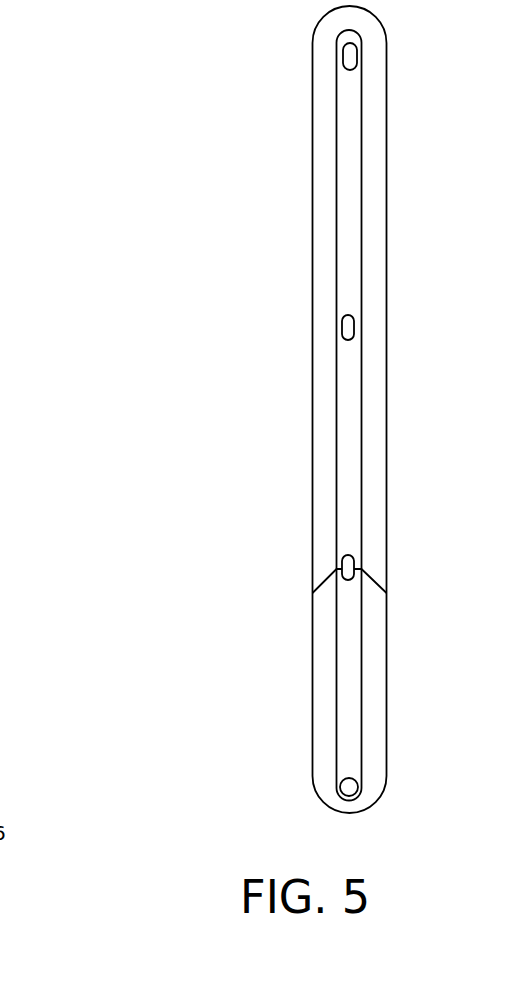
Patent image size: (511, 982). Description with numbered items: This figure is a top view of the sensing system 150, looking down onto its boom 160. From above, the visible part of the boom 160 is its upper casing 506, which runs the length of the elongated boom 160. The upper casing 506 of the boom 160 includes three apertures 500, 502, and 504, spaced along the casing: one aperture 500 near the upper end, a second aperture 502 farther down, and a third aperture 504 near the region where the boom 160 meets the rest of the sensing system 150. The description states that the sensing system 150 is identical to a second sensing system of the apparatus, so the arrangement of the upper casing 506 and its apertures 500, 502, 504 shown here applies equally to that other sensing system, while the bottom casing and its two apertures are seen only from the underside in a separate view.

The sensing system 150 is at (298, 692).
The boom 160 is at (308, 330).
The aperture 500 is at (352, 62).
The aperture 502 is at (353, 328).
The aperture 504 is at (350, 570).
The upper casing 506 is at (347, 462).